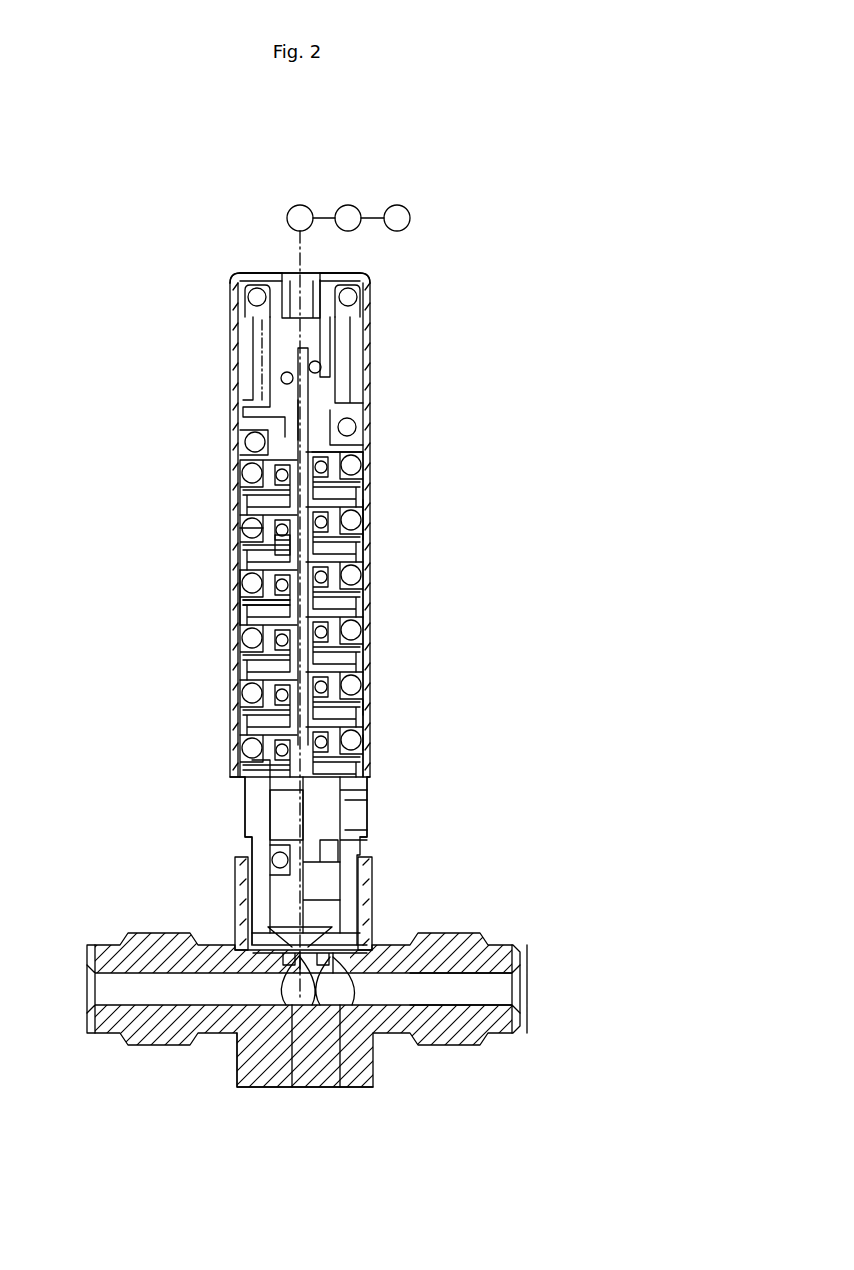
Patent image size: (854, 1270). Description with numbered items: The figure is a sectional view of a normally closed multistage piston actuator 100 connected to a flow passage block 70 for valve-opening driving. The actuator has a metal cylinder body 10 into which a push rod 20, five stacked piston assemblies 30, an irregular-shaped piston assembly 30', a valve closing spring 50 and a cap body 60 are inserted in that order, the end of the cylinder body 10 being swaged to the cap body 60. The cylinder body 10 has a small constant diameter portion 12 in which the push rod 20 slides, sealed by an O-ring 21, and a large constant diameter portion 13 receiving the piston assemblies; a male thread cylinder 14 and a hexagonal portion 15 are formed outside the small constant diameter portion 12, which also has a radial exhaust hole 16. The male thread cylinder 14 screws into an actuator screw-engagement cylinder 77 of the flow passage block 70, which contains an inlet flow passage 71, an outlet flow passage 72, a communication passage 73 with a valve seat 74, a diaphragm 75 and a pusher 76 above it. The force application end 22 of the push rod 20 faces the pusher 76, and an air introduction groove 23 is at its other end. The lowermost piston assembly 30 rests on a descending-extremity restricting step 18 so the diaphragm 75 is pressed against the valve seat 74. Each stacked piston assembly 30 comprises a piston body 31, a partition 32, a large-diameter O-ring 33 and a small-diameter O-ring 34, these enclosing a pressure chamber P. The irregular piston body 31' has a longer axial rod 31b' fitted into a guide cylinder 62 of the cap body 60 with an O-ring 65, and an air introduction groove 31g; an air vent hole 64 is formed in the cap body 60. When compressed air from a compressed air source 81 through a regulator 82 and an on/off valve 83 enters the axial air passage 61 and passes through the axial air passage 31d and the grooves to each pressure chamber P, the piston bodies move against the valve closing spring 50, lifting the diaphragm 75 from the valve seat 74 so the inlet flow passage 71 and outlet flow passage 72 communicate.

The multistage piston actuator 100 is at (420, 250).
The cylinder body 10 is at (371, 620).
The small constant diameter portion 12 is at (366, 795).
The large constant diameter portion 13 is at (360, 709).
The male thread cylinder 14 is at (368, 872).
The hexagonal portion 15 is at (250, 818).
The exhaust hole 16 is at (350, 812).
The descending-extremity restricting step 18 is at (250, 768).
The push rod 20 is at (283, 807).
The O-ring 21 is at (274, 858).
The force application end 22 is at (266, 916).
The air introduction groove 23 is at (358, 743).
The stacked piston assembly 30 is at (241, 614).
The irregular-shaped piston assembly 30' is at (229, 428).
The piston body 31 is at (217, 528).
The irregular piston body 31' is at (381, 381).
The axial rod 31b' is at (366, 546).
The axial air passage 31d is at (306, 420).
The air introduction groove 31g is at (352, 461).
The partition 32 is at (246, 598).
The large-diameter O-ring 33 is at (250, 582).
The small-diameter O-ring 34 is at (268, 558).
The valve closing spring 50 is at (270, 385).
The cap body 60 is at (262, 275).
The axial air passage 61 is at (312, 288).
The guide cylinder 62 is at (328, 340).
The air vent hole 64 is at (366, 273).
The O-ring 65 is at (320, 368).
The flow passage block 70 is at (443, 946).
The inlet flow passage 71 is at (248, 1045).
The outlet flow passage 72 is at (453, 1008).
The communication passage 73 is at (353, 1040).
The valve seat 74 is at (292, 1040).
The diaphragm 75 is at (322, 916).
The pusher 76 is at (352, 908).
The actuator screw-engagement cylinder 77 is at (240, 877).
The compressed air source 81 is at (400, 205).
The regulator 82 is at (348, 205).
The on/off valve 83 is at (300, 205).
The pressure chamber P is at (372, 512).